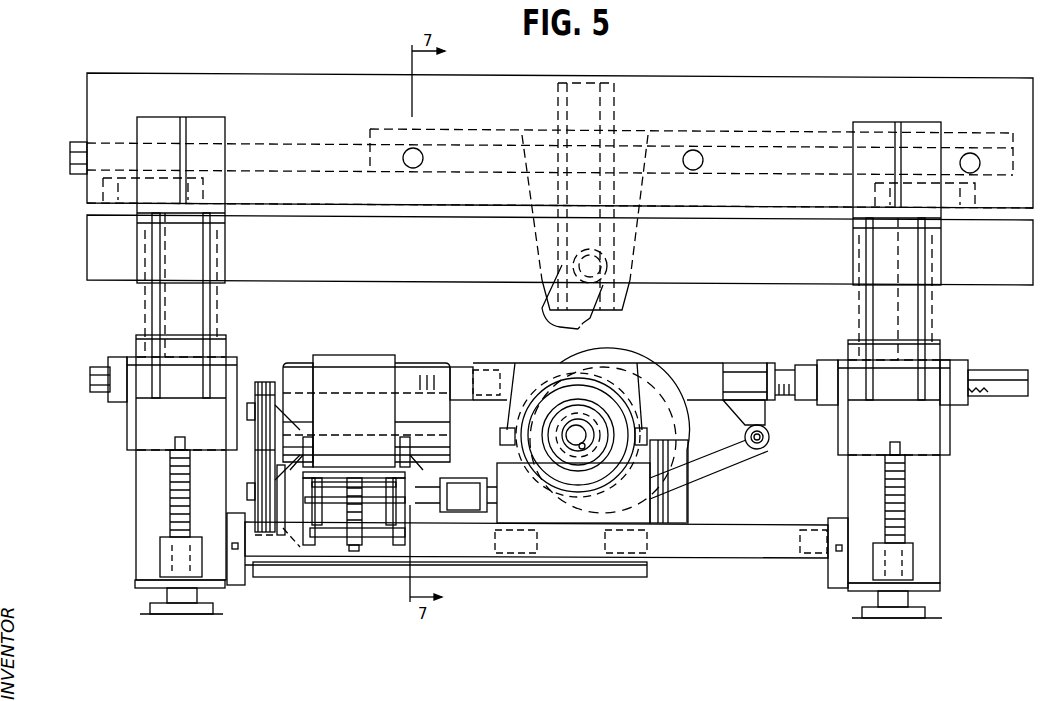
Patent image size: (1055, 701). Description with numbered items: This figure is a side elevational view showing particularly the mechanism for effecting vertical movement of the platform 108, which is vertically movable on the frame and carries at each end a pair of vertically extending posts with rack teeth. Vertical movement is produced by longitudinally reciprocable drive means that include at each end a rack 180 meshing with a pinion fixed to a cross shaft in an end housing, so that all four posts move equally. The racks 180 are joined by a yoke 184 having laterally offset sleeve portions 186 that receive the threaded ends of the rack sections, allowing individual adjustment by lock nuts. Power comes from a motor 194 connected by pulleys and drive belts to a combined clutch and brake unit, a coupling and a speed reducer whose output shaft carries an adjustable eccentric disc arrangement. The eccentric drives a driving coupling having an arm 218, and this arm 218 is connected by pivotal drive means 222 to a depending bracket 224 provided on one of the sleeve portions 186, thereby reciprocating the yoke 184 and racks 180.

The platform 108 is at (68, 150).
The motor 194 is at (385, 357).
The yoke 184 is at (667, 366).
The sleeve portions 186 is at (747, 371).
The rack 180 is at (982, 368).
The depending bracket 224 is at (766, 418).
The pivotal drive means 222 is at (770, 443).
The arm 218 is at (722, 466).